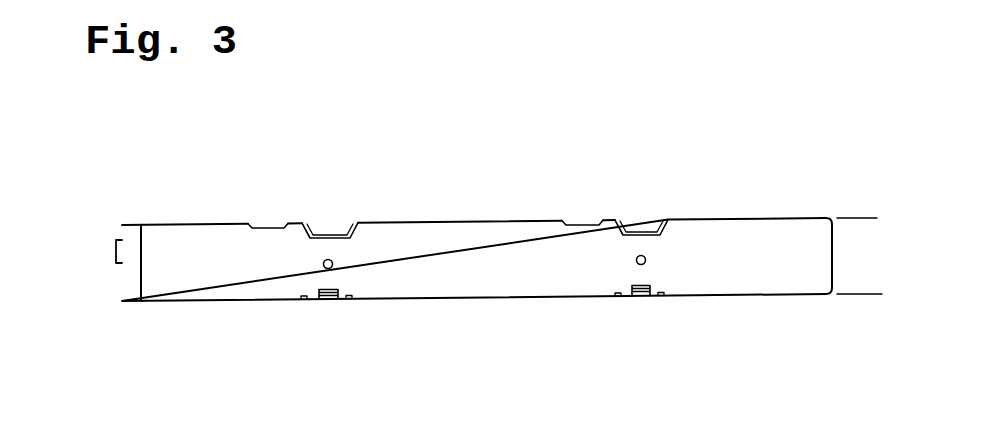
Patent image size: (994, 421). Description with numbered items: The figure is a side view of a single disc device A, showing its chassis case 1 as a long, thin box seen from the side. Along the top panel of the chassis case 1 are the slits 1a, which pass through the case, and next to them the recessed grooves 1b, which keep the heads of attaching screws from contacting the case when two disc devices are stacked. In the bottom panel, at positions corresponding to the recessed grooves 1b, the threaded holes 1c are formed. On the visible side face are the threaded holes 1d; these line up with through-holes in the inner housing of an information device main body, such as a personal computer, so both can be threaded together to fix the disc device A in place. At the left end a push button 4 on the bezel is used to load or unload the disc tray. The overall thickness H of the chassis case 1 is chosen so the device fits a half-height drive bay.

The chassis case 1 is at (475, 221).
The slit 1a is at (270, 222).
The recessed groove 1b is at (340, 223).
The threaded hole 1c is at (328, 301).
The threaded hole 1d is at (334, 266).
The push button 4 is at (117, 250).
The disc device A is at (710, 208).
The thickness H is at (858, 218).